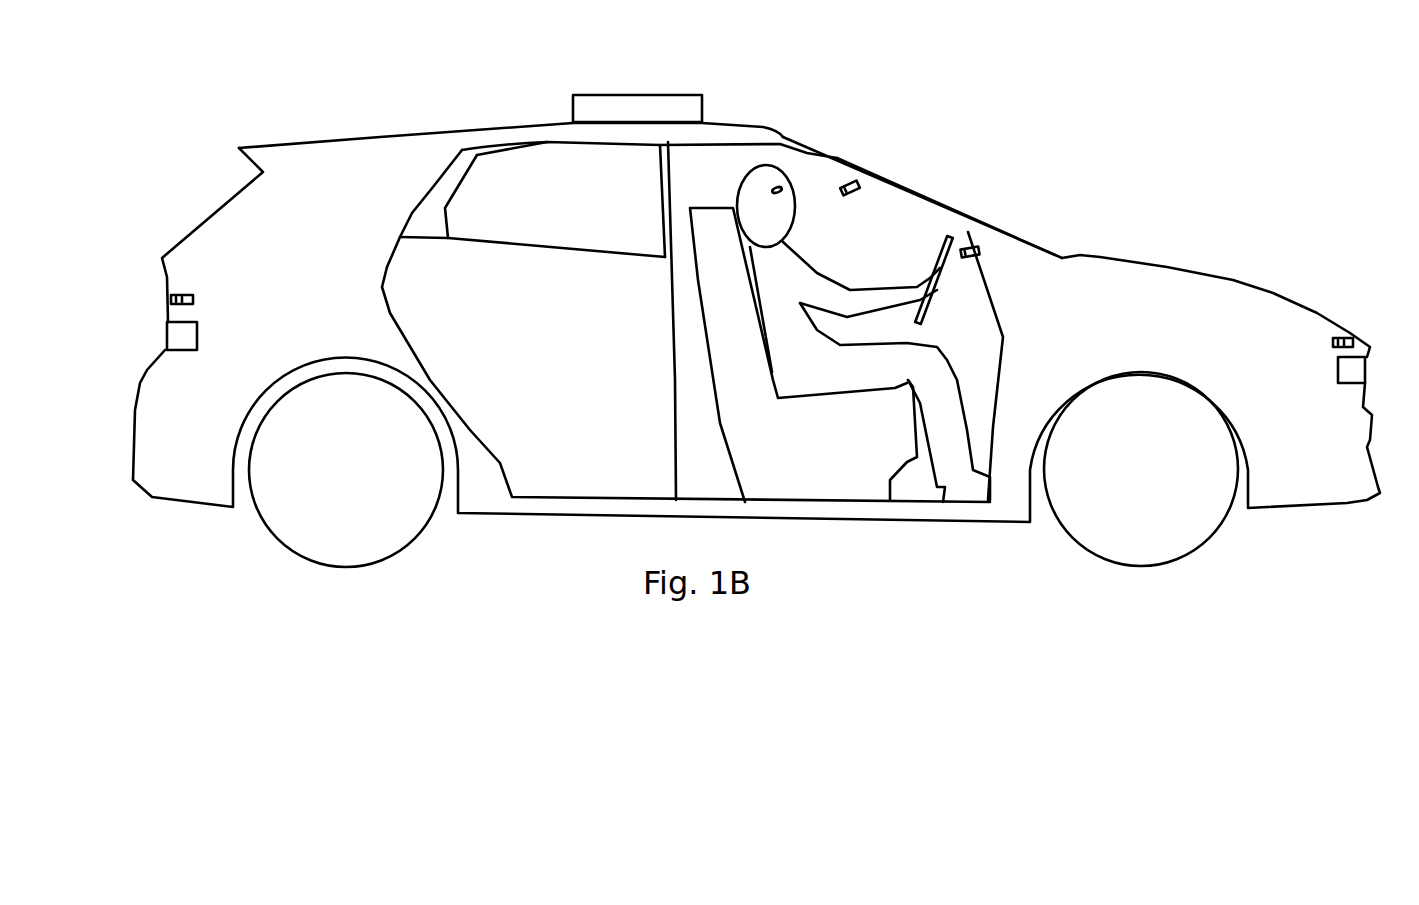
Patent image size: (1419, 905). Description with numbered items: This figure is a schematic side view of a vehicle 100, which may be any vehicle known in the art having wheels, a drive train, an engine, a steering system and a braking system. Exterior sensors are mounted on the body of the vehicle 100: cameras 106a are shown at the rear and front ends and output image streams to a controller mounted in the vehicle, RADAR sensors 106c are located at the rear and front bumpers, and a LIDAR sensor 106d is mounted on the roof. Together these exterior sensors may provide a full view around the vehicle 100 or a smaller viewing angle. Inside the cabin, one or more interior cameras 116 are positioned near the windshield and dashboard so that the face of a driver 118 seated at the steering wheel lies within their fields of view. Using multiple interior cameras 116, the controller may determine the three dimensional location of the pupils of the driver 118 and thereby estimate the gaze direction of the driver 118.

The vehicle 100 is at (387, 180).
The camera 106a is at (180, 293).
The RADAR sensor 106c is at (180, 338).
The LIDAR sensor 106d is at (628, 108).
The interior camera 116 is at (853, 192).
The driver 118 is at (763, 182).